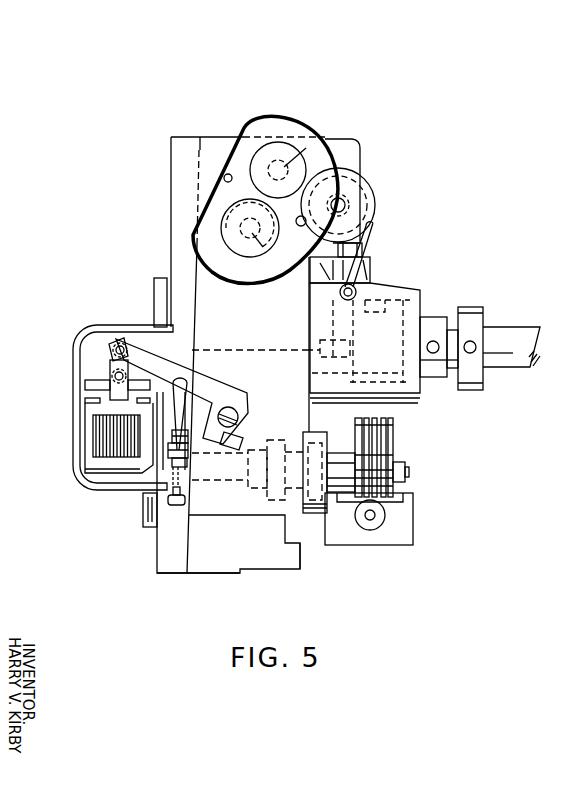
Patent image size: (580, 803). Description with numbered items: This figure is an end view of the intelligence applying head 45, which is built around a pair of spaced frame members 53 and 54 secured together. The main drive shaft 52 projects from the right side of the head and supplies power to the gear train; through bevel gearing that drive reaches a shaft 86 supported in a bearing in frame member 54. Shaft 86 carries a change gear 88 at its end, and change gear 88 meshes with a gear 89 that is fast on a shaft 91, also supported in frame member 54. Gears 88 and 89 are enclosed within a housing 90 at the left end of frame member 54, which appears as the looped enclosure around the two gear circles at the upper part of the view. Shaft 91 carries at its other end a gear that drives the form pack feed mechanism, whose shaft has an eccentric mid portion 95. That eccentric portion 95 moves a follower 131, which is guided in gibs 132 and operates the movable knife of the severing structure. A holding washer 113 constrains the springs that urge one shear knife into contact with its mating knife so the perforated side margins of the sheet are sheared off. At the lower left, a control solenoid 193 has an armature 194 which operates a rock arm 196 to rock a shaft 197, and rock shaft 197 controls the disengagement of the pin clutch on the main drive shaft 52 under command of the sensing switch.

The intelligence applying head 45 is at (331, 65).
The main drive shaft 52 is at (510, 333).
The frame member 53 is at (170, 246).
The frame member 54 is at (350, 153).
The shaft 86 is at (266, 253).
The change gear 88 is at (248, 262).
The gear 89 is at (275, 148).
The housing 90 is at (231, 152).
The shaft 91 is at (309, 144).
The eccentric mid portion 95 is at (370, 190).
The holding washer 113 is at (372, 273).
The follower 131 is at (380, 228).
The gibs 132 is at (372, 258).
The control solenoid 193 is at (100, 430).
The armature 194 is at (110, 391).
The rock arm 196 is at (218, 392).
The rock shaft 197 is at (248, 410).